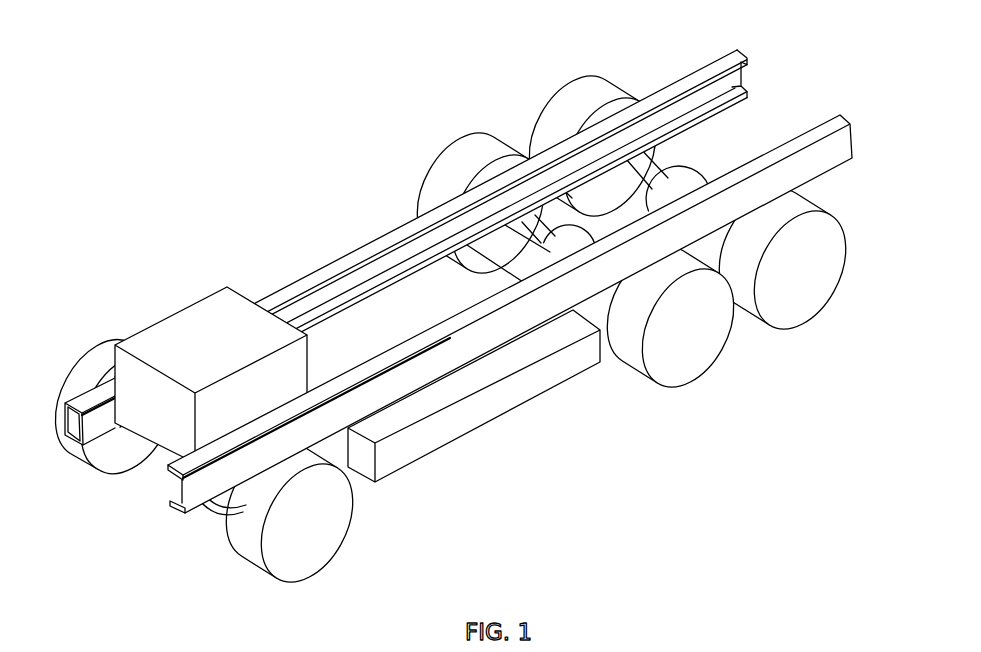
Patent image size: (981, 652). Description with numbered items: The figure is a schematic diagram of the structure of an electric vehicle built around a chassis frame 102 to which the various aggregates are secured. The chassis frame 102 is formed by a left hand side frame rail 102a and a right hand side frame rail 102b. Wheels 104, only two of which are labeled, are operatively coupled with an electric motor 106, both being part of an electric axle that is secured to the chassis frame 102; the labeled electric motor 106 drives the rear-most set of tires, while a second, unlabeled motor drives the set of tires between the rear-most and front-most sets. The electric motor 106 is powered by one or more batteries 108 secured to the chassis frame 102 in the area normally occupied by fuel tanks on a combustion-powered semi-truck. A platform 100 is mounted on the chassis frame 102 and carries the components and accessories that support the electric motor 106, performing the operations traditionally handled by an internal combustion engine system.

The platform 100 is at (218, 305).
The chassis frame 102 is at (167, 505).
The left hand side frame rail 102a is at (830, 125).
The right hand side frame rail 102b is at (713, 58).
The wheels 104 is at (812, 297).
The electric motor 106 is at (683, 163).
The batteries 108 is at (485, 408).